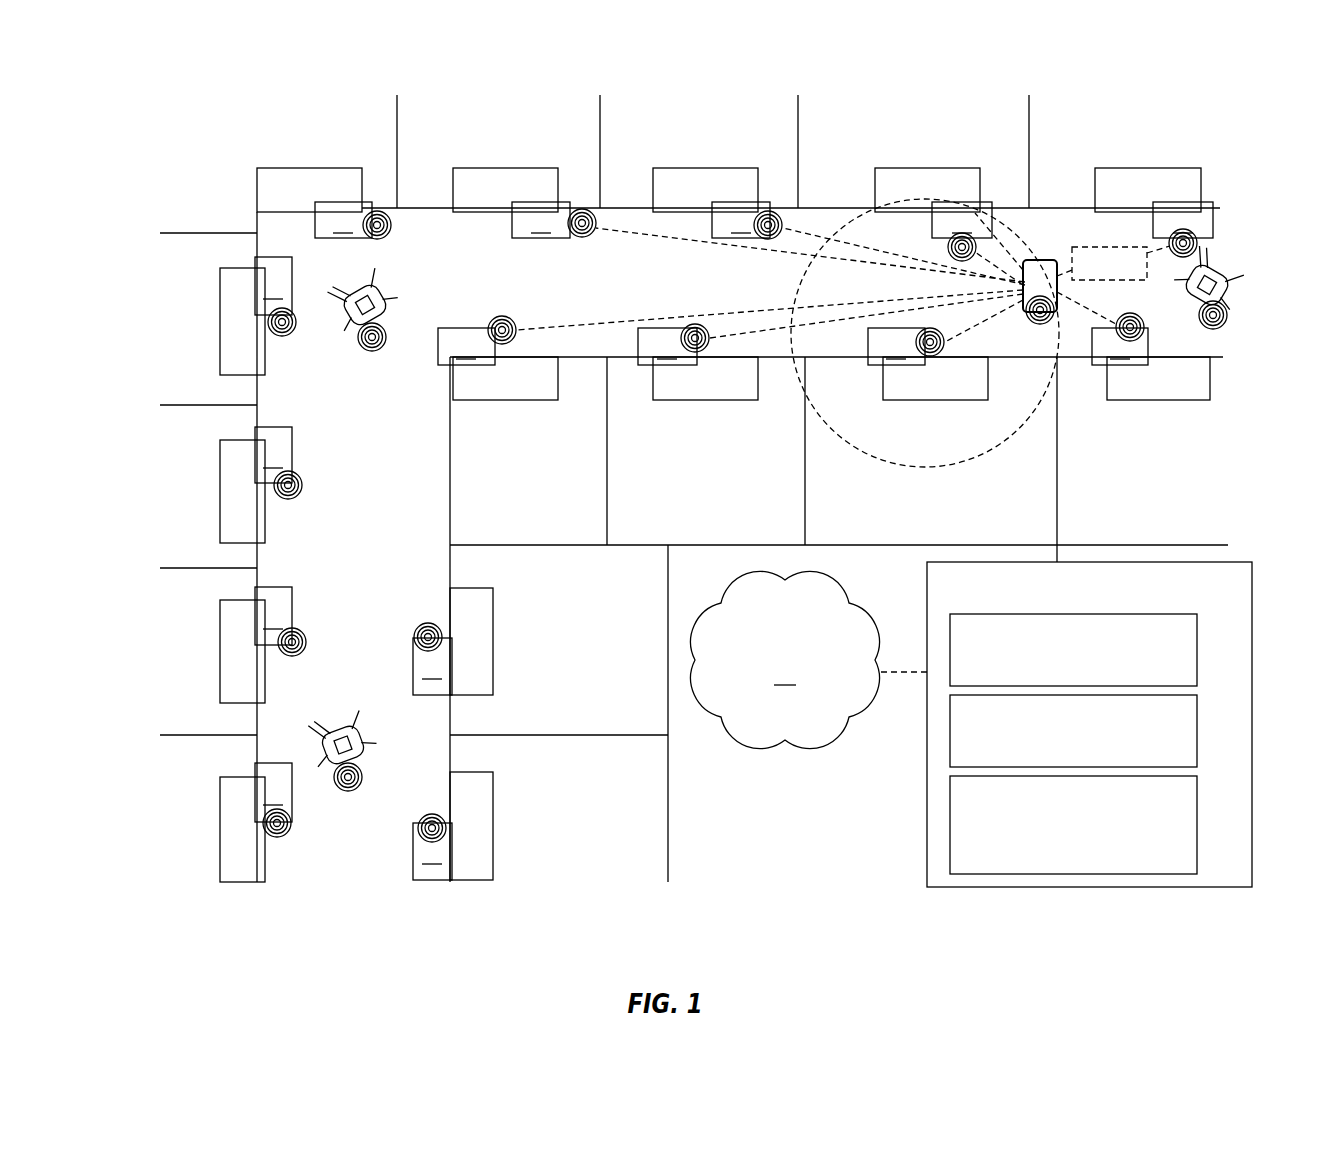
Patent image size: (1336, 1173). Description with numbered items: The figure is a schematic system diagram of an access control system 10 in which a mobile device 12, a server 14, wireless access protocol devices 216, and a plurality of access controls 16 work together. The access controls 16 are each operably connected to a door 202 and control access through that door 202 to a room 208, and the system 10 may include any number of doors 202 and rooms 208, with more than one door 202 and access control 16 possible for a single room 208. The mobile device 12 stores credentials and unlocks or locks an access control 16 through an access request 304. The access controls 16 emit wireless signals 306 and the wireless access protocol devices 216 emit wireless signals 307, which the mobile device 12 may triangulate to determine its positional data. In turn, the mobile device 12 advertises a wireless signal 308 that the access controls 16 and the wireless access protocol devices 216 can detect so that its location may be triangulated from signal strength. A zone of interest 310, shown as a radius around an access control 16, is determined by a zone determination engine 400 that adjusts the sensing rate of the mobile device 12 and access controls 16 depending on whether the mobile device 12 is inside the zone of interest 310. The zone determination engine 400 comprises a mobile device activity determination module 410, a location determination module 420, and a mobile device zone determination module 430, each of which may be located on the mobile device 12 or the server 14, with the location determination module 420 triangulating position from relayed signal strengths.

The access control system 10 is at (184, 147).
The mobile device 12 is at (1040, 286).
The server 14 is at (785, 659).
The access control 16 is at (734, 541).
The door 202 is at (275, 168).
The room 208 is at (293, 136).
The wireless access protocol device 216 is at (373, 297).
The access request 304 is at (1078, 247).
The wireless signals from the access controls 306 is at (391, 228).
The wireless signals from the wireless access protocol devices 307 is at (377, 347).
The wireless signal advertised by the mobile device 308 is at (1037, 328).
The zone of interest 310 is at (868, 454).
The zone determination engine 400 is at (1089, 699).
The mobile device activity determination module 410 is at (1202, 650).
The location determination module 420 is at (1202, 721).
The mobile device zone determination module 430 is at (1202, 800).